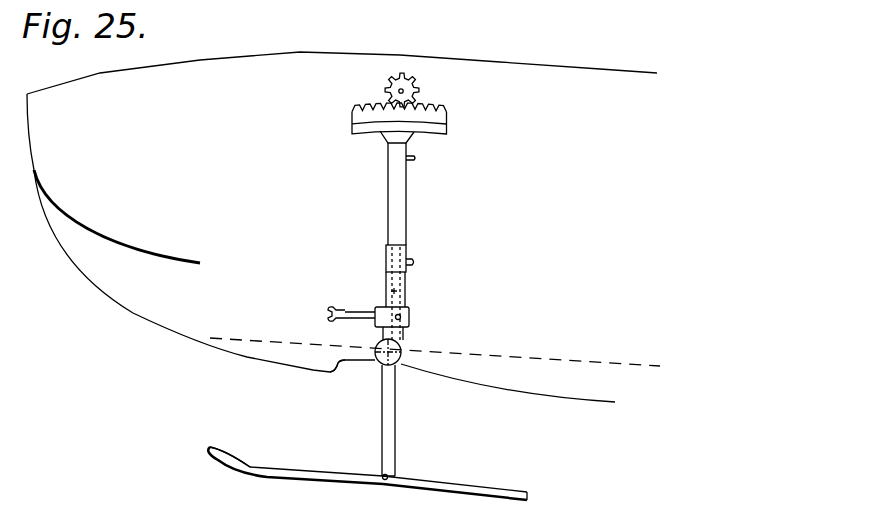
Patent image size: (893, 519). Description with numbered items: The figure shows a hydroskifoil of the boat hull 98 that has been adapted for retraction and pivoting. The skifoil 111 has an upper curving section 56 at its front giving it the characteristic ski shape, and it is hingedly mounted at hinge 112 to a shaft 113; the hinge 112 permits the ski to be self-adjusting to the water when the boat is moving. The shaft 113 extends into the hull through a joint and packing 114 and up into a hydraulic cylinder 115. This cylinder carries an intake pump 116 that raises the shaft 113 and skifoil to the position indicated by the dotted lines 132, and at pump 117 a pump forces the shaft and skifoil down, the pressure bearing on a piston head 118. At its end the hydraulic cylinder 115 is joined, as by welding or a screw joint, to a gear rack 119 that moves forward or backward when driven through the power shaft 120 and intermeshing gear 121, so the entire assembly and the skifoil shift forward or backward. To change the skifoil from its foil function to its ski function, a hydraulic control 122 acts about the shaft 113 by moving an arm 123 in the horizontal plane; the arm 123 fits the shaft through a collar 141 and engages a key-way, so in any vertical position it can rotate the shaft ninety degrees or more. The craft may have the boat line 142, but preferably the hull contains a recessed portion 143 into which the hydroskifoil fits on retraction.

The hull 98 is at (342, 202).
The skifoil 111 is at (330, 483).
The hinge 112 is at (393, 474).
The shaft 113 is at (389, 427).
The joint and packing 114 is at (400, 348).
The hydraulic cylinder 115 is at (406, 213).
The intake pump 116 is at (413, 262).
The pump 117 is at (416, 158).
The piston head 118 is at (388, 246).
The gear rack 119 is at (440, 121).
The power shaft 120 is at (397, 90).
The intermeshing gear 121 is at (414, 89).
The hydraulic control 122 is at (333, 306).
The arm 123 is at (359, 309).
The dotted lines 132 is at (405, 292).
The collar 141 is at (410, 315).
The boat line 142 is at (568, 354).
The recessed portion 143 is at (347, 368).
The upper curving section 56 is at (228, 461).